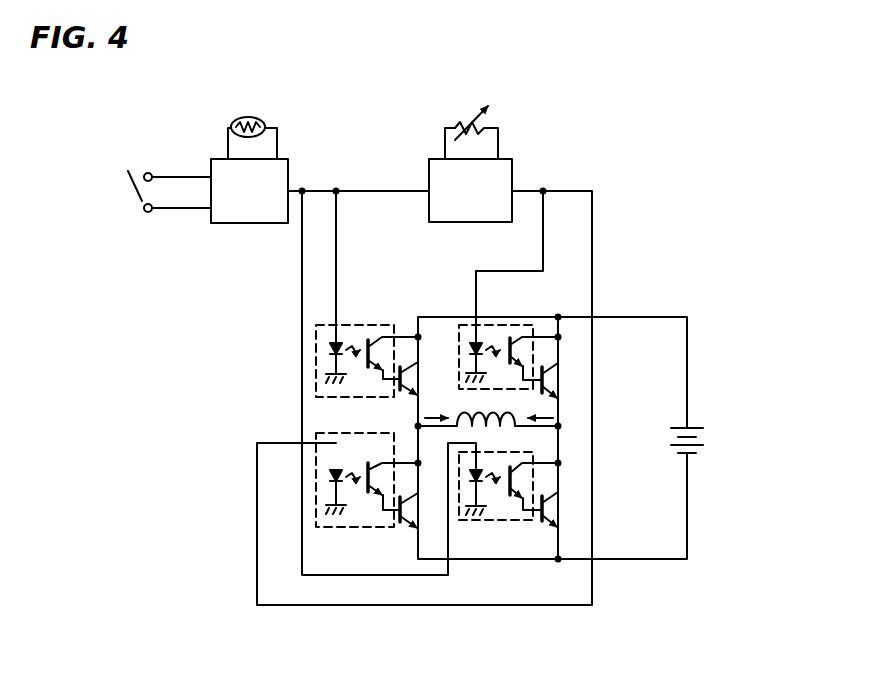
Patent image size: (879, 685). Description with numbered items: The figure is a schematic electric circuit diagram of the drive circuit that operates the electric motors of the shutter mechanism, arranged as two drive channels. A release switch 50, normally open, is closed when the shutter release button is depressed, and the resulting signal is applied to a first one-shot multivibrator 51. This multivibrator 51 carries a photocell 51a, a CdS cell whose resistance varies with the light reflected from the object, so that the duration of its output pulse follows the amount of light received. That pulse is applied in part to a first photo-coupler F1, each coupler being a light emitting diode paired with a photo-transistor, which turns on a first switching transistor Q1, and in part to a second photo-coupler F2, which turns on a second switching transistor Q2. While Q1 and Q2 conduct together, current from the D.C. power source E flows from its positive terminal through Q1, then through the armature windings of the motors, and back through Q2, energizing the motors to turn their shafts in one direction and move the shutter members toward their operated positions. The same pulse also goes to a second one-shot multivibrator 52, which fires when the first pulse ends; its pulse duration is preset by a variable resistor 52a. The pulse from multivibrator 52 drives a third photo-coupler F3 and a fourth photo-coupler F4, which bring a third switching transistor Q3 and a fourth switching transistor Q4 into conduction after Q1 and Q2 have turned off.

The release switch 50 is at (136, 188).
The first one-shot multivibrator 51 is at (239, 223).
The photocell 51a is at (260, 117).
The second one-shot multivibrator 52 is at (508, 175).
The variable resistor 52a is at (490, 104).
The first photo-coupler F1 is at (316, 355).
The second photo-coupler F2 is at (527, 520).
The third photo-coupler F3 is at (468, 325).
The fourth photo-coupler F4 is at (316, 463).
The first switching transistor Q1 is at (407, 377).
The second switching transistor Q2 is at (552, 505).
The third switching transistor Q3 is at (547, 380).
The fourth switching transistor Q4 is at (408, 522).
The D.C. power source E is at (703, 437).